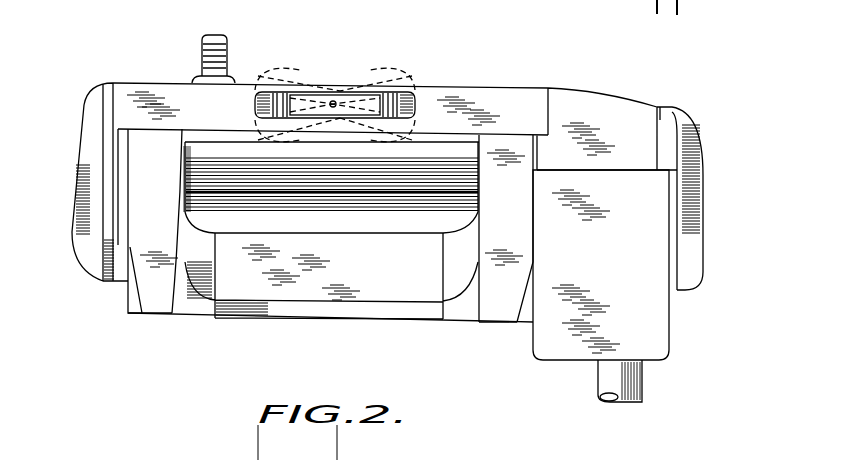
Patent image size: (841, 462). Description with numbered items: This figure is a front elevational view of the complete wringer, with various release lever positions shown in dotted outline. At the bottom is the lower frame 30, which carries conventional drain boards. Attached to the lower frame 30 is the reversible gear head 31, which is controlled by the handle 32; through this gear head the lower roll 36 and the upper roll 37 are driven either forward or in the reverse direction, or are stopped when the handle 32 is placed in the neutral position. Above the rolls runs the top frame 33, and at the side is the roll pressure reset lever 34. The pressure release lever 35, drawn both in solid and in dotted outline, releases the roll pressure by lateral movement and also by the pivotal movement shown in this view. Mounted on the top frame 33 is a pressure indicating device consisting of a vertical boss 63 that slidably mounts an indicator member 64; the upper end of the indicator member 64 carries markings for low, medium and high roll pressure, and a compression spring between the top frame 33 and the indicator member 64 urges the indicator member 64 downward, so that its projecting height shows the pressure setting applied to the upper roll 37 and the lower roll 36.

The lower frame 30 is at (162, 313).
The reversible gear head 31 is at (672, 310).
The handle 32 is at (703, 215).
The top frame 33 is at (476, 88).
The roll pressure reset lever 34 is at (73, 188).
The pressure release lever 35 is at (350, 90).
The lower roll 36 is at (331, 266).
The upper roll 37 is at (331, 187).
The vertical boss 63 is at (192, 76).
The indicator member 64 is at (224, 45).